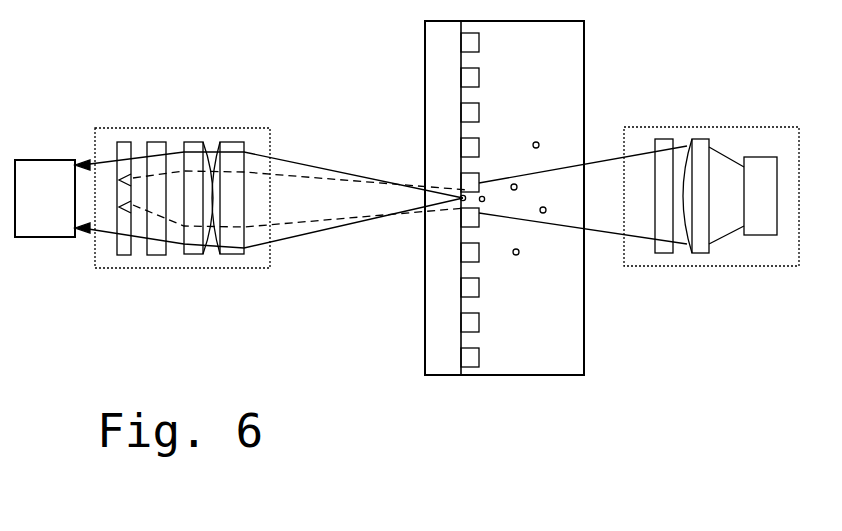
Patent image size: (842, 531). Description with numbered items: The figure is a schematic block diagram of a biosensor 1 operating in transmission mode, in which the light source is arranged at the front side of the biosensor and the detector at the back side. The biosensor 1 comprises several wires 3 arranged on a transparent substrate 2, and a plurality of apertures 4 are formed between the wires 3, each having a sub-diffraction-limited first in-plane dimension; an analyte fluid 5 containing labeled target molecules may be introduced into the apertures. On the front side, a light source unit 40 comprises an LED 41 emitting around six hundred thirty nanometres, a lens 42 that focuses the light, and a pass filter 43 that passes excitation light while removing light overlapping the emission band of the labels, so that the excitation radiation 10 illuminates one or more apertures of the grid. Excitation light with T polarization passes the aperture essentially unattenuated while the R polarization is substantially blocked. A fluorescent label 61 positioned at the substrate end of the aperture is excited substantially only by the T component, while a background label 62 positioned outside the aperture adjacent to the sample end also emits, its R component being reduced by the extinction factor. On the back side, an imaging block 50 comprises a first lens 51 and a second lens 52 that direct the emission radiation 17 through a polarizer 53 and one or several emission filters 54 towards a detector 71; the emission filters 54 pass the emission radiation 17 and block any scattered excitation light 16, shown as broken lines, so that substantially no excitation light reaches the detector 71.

The biosensor 1 is at (481, 273).
The transparent substrate 2 is at (443, 375).
The wires 3 is at (479, 319).
The apertures 4 is at (472, 336).
The analyte fluid 5 is at (557, 325).
The excitation radiation 10 is at (602, 230).
The scattered excitation light 16 is at (300, 223).
The emission radiation 17 is at (305, 234).
The light source unit 40 is at (711, 201).
The LED 41 is at (770, 157).
The lens 42 is at (702, 139).
The pass filter 43 is at (667, 139).
The imaging block 50 is at (179, 206).
The first lens 51 is at (240, 142).
The second lens 52 is at (200, 142).
The polarizer 53 is at (158, 142).
The emission filter 54 is at (127, 142).
The fluorescent label 61 is at (465, 192).
The background label 62 is at (484, 201).
The detector 71 is at (50, 160).